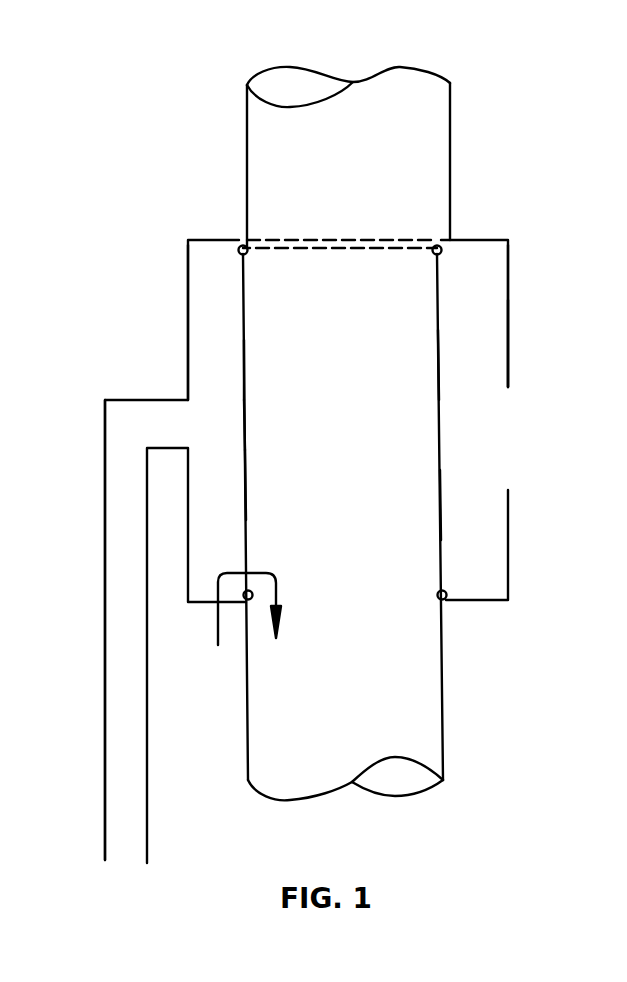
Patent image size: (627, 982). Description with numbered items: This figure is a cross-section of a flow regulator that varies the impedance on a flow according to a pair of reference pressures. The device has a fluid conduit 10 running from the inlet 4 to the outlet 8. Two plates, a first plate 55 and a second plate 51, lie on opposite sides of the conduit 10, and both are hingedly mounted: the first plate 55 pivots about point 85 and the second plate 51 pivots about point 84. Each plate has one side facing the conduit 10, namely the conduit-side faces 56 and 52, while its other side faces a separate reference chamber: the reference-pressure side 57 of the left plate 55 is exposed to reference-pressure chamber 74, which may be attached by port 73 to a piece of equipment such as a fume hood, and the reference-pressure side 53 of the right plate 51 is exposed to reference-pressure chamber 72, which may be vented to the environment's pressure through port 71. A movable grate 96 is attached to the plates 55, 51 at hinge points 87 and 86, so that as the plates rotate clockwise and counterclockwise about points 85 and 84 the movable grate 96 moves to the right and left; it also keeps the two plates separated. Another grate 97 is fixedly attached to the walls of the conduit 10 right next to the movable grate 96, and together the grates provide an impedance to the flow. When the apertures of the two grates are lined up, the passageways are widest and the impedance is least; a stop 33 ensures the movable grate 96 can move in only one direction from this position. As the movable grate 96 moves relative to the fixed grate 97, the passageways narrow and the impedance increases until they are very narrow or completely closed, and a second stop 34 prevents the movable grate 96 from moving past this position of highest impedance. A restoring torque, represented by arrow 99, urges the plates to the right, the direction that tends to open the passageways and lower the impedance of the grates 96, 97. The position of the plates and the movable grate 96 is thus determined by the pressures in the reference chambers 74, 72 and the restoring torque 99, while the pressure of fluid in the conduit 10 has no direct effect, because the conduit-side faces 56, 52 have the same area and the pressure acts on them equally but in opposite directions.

The inlet 4 is at (443, 718).
The outlet 8 is at (452, 110).
The fluid conduit 10 is at (406, 802).
The stop 33 is at (446, 246).
The second stop 34 is at (238, 250).
The second plate 51 is at (433, 356).
The conduit-side face of second plate 52 is at (440, 474).
The reference-pressure side of right plate 53 is at (445, 510).
The first plate 55 is at (250, 483).
The conduit-side face of first plate 56 is at (247, 432).
The reference-pressure side of left plate 57 is at (246, 388).
The port 71 is at (510, 385).
The reference-pressure chamber 72 is at (478, 332).
The port 73 is at (105, 522).
The reference-pressure chamber 74 is at (220, 318).
The pivot point 84 is at (446, 604).
The pivot point 85 is at (247, 604).
The hinge point 86 is at (440, 240).
The hinge point 87 is at (246, 246).
The movable grate 96 is at (363, 250).
The fixed grate 97 is at (350, 240).
The restoring torque 99 is at (218, 640).